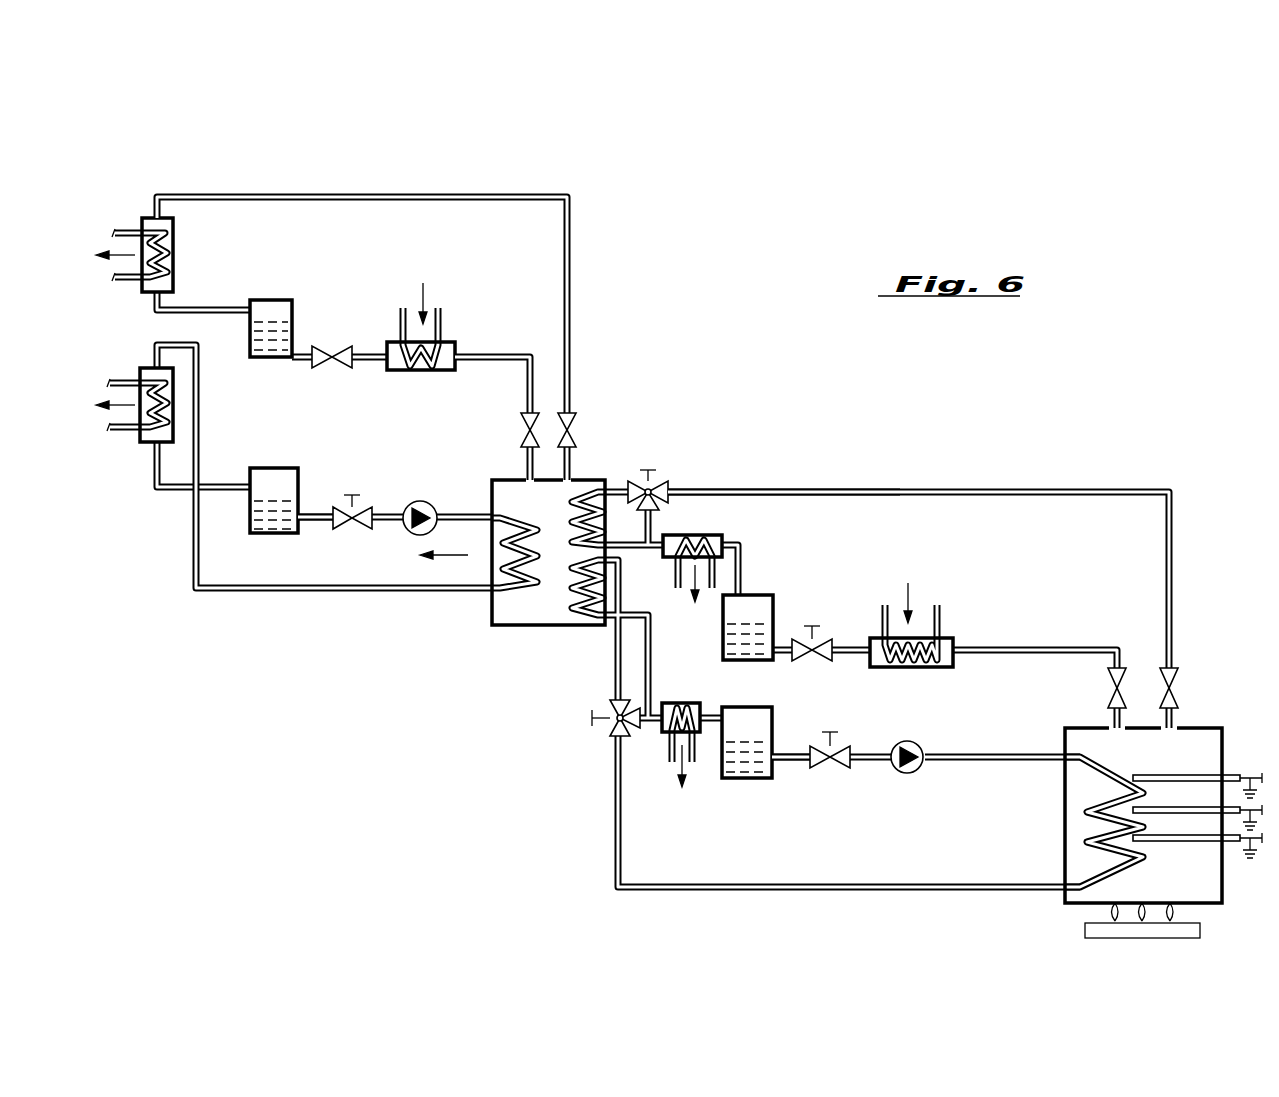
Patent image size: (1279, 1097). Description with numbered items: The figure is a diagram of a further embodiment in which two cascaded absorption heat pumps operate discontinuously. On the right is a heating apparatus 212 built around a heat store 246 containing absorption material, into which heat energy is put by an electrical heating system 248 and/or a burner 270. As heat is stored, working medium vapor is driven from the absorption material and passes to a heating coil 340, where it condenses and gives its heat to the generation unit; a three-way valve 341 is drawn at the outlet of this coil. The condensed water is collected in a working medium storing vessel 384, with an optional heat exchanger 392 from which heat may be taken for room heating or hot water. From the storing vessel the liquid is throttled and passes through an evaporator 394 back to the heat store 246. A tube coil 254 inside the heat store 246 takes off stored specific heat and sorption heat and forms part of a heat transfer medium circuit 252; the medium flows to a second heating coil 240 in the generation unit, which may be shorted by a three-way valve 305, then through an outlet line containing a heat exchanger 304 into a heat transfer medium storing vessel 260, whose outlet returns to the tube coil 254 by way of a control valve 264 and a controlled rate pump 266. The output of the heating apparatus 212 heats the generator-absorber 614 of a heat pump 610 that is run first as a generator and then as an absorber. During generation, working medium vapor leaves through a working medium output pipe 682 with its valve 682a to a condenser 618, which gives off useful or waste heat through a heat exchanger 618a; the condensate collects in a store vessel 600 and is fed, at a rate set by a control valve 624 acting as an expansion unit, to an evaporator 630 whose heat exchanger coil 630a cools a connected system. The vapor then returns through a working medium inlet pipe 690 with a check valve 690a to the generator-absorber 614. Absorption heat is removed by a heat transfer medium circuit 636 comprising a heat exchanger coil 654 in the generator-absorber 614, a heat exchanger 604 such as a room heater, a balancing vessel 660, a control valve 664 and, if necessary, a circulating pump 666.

The heating apparatus 212 is at (942, 550).
The second heating coil 240 is at (590, 617).
The heat store 246 is at (1200, 740).
The electrical heating system 248 is at (1233, 773).
The heat transfer medium circuit 252 is at (708, 846).
The tube coil 254 is at (1087, 812).
The heat transfer medium storing vessel 260 is at (758, 708).
The control valve 264 is at (820, 766).
The controlled rate pump 266 is at (910, 773).
The burner 270 is at (1090, 930).
The heat exchanger 304 is at (675, 701).
The three-way valve 305 is at (610, 703).
The heating coil 340 is at (578, 520).
The three-way valve 341 is at (668, 483).
The working medium storing vessel 384 is at (765, 597).
The heat exchanger 392 is at (720, 532).
The evaporator 394 is at (938, 663).
The store vessel 600 is at (272, 304).
The heat exchanger 604 is at (148, 437).
The heat pump 610 is at (298, 651).
The generator-absorber 614 is at (585, 480).
The condenser 618 is at (173, 233).
The heat exchanger 618a is at (124, 282).
The control valve 624 is at (330, 362).
The evaporator 630 is at (455, 346).
The heat exchanger coil 630a is at (400, 319).
The heat transfer medium circuit 636 is at (245, 573).
The heat exchanger coil 654 is at (515, 590).
The heat transfer medium store or balancing vessel 660 is at (276, 472).
The control valve 664 is at (350, 530).
The circulating pump 666 is at (418, 500).
The working medium output pipe 682 is at (383, 200).
The valve 682a is at (576, 418).
The working medium inlet pipe 690 is at (500, 359).
The valve 690a is at (522, 427).